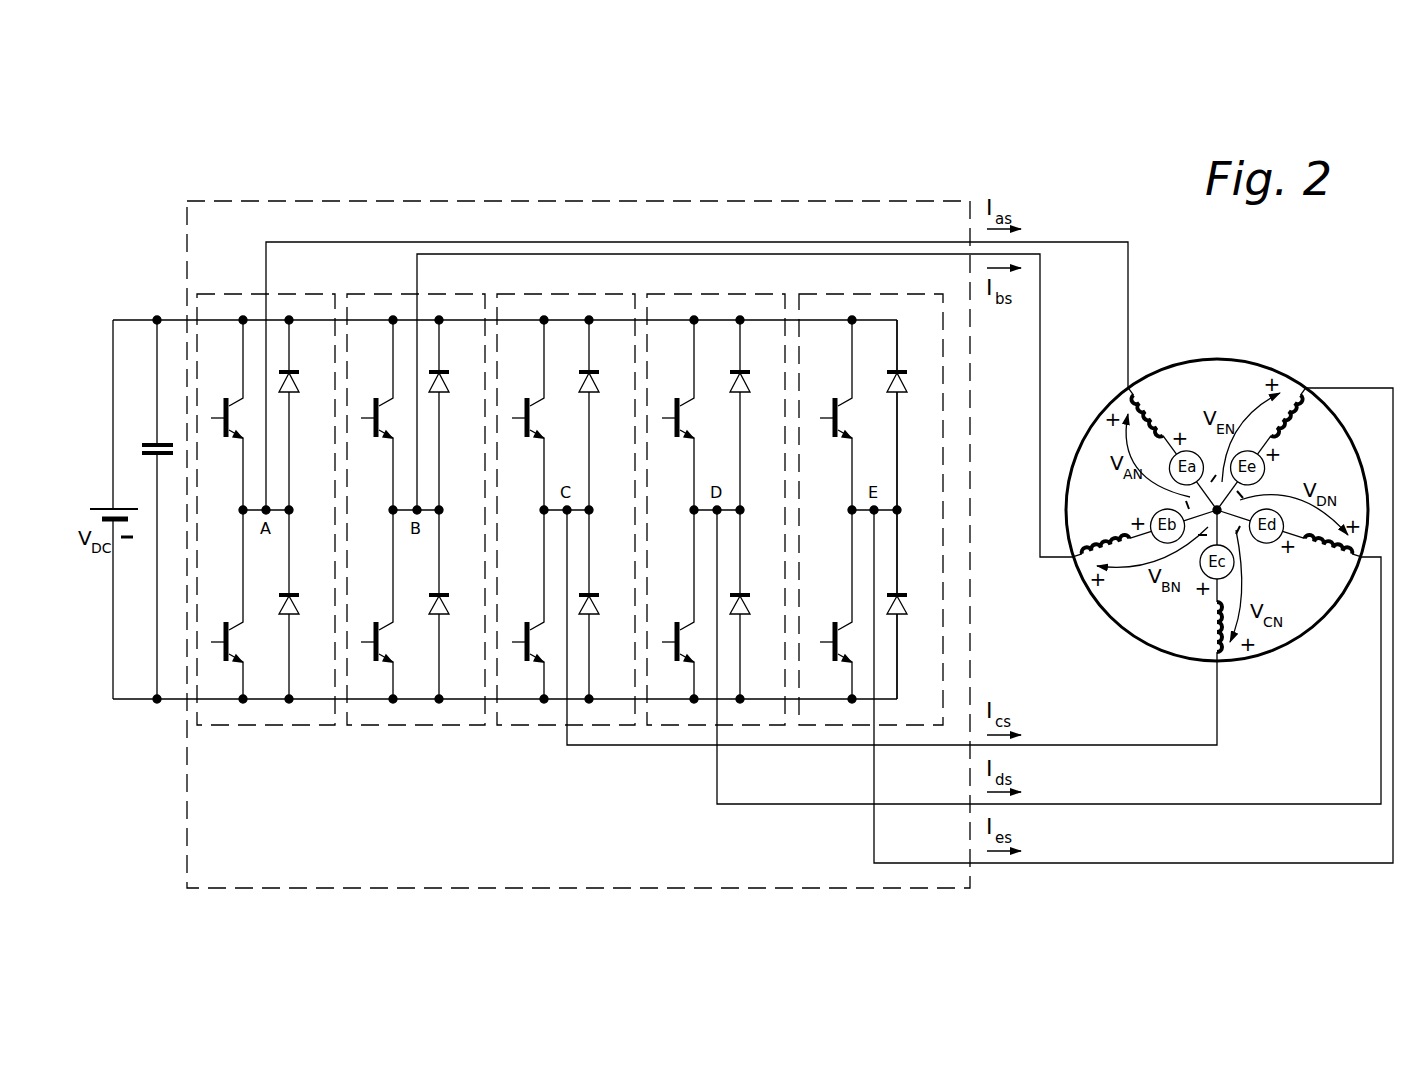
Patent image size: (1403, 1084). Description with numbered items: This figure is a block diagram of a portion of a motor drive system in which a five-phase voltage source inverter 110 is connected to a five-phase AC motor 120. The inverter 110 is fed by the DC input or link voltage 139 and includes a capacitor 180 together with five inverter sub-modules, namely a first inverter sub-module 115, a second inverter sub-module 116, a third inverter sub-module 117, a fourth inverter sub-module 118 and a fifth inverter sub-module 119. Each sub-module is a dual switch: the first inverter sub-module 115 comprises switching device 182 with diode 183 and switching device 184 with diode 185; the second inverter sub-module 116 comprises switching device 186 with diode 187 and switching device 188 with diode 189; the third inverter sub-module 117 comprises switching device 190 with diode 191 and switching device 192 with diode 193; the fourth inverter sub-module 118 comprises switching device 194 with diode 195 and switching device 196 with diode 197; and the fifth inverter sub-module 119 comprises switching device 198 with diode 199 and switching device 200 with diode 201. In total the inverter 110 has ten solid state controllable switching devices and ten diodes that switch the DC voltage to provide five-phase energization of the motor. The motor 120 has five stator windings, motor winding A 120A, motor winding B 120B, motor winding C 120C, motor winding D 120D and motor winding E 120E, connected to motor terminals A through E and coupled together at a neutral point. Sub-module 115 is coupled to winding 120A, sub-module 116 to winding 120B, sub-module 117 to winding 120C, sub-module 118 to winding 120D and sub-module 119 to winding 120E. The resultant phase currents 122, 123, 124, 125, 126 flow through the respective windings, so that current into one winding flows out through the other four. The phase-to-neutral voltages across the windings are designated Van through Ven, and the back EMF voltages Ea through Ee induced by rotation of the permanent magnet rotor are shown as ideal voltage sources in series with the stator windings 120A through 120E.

The five-phase voltage source inverter 110 is at (578, 201).
The first inverter sub-module 115 is at (295, 294).
The second inverter sub-module 116 is at (445, 294).
The third inverter sub-module 117 is at (595, 294).
The fourth inverter sub-module 118 is at (745, 294).
The fifth inverter sub-module 119 is at (897, 294).
The five-phase AC motor 120 is at (1255, 360).
The motor winding A 120A is at (1160, 402).
The motor winding B 120B is at (1103, 531).
The motor winding C 120C is at (1204, 640).
The motor winding D 120D is at (1316, 563).
The motor winding E 120E is at (1298, 424).
The phase current Ia 122 is at (1082, 242).
The phase current Ib 123 is at (1040, 335).
The phase current Ic 124 is at (1085, 745).
The phase current Id 125 is at (1085, 804).
The phase current Ie 126 is at (1093, 863).
The DC input voltage 139 is at (92, 509).
The capacitor 180 is at (144, 445).
The solid state controllable switching device 182 is at (225, 400).
The diode 183 is at (299, 372).
The solid state controllable switching device 184 is at (225, 624).
The diode 185 is at (299, 595).
The solid state controllable switching device 186 is at (375, 400).
The diode 187 is at (449, 372).
The solid state controllable switching device 188 is at (375, 624).
The diode 189 is at (449, 595).
The solid state controllable switching device 190 is at (541, 419).
The diode 191 is at (579, 372).
The solid state controllable switching device 192 is at (526, 624).
The diode 193 is at (599, 595).
The solid state controllable switching device 194 is at (691, 419).
The diode 195 is at (730, 372).
The solid state controllable switching device 196 is at (676, 624).
The diode 197 is at (750, 595).
The solid state controllable switching device 198 is at (849, 419).
The diode 199 is at (887, 372).
The solid state controllable switching device 200 is at (834, 624).
The diode 201 is at (907, 595).